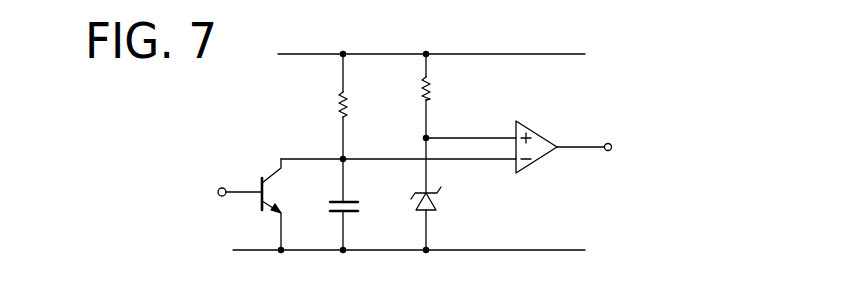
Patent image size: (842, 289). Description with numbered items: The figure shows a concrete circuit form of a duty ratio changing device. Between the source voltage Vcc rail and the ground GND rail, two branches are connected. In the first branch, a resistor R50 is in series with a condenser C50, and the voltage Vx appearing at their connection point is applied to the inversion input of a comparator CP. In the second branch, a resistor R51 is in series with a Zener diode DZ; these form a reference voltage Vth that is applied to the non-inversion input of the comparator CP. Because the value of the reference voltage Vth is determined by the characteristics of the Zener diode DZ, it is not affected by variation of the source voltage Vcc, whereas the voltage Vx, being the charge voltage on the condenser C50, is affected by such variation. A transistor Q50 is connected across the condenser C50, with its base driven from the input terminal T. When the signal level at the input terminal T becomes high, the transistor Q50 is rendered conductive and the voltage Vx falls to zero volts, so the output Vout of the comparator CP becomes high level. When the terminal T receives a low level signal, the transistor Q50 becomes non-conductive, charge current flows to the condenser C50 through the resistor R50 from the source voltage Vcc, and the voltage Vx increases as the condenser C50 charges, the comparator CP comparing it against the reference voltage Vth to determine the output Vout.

The resistor R50 is at (367, 106).
The resistor R51 is at (451, 96).
The condenser C50 is at (367, 204).
The Zener diode DZ is at (443, 194).
The transistor Q50 is at (277, 204).
The comparator CP is at (540, 128).
The input terminal T is at (213, 192).
The voltage Vx is at (345, 157).
The reference voltage Vth is at (428, 136).
The source voltage Vcc is at (451, 53).
The output Vout is at (633, 146).
The ground GND is at (437, 248).